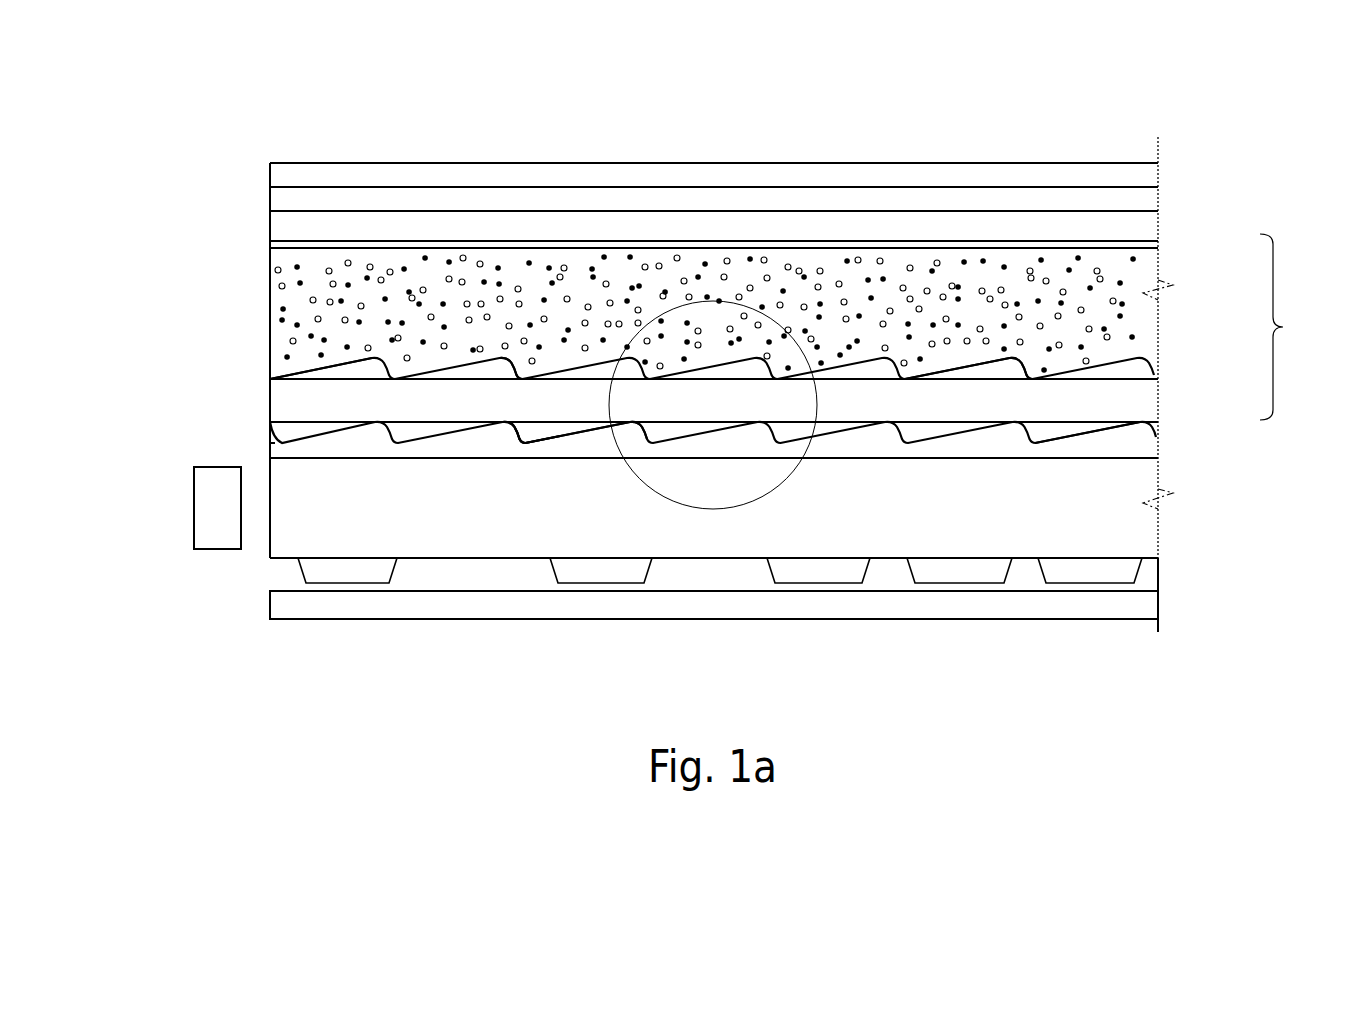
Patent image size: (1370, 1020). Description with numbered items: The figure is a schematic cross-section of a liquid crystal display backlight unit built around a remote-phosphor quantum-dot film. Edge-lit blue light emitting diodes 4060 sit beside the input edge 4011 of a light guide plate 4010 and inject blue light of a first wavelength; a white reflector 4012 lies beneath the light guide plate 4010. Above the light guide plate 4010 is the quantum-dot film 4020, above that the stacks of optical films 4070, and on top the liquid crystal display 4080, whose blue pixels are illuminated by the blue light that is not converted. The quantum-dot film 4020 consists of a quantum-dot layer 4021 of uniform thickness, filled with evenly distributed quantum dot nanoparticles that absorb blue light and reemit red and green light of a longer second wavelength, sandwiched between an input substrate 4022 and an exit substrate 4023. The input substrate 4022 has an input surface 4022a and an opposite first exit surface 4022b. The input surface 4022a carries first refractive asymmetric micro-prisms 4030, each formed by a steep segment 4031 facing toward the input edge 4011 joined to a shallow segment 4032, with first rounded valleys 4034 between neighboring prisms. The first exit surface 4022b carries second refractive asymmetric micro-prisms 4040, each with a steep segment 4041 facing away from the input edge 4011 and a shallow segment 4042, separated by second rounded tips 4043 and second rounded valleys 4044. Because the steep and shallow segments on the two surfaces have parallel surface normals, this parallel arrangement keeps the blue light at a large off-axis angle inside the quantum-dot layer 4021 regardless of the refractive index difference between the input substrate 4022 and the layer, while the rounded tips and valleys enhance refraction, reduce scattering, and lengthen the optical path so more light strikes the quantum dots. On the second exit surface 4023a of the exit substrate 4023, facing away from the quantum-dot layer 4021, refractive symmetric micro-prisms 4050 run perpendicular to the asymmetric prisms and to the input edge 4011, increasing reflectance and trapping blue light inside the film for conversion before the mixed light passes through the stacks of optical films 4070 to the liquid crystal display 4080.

The light guide plate 4010 is at (1143, 520).
The input edge 4011 is at (270, 532).
The white reflector 4012 is at (1143, 600).
The quantum-dot film 4020 is at (805, 338).
The quantum-dot layer 4021 is at (1143, 315).
The input substrate 4022 is at (1140, 400).
The input surface 4022a is at (1060, 423).
The first exit surface 4022b is at (1013, 379).
The exit substrate 4023 is at (1158, 245).
The second exit surface 4023a is at (972, 240).
The first refractive asymmetric micro-prisms 4030 is at (550, 446).
The steep segment 4031 is at (530, 442).
The shallow segment 4032 is at (575, 436).
The first rounded valleys 4034 is at (528, 447).
The second refractive asymmetric micro-prisms 4040 is at (443, 361).
The steep segment 4041 is at (540, 374).
The shallow segment 4042 is at (485, 352).
The second rounded tips 4043 is at (523, 355).
The second rounded valleys 4044 is at (403, 374).
The refractive symmetric micro-prisms 4050 is at (1158, 223).
The edge-lit blue light emitting diodes 4060 is at (212, 510).
The stacks of optical films 4070 is at (1155, 197).
The liquid crystal display 4080 is at (1120, 175).